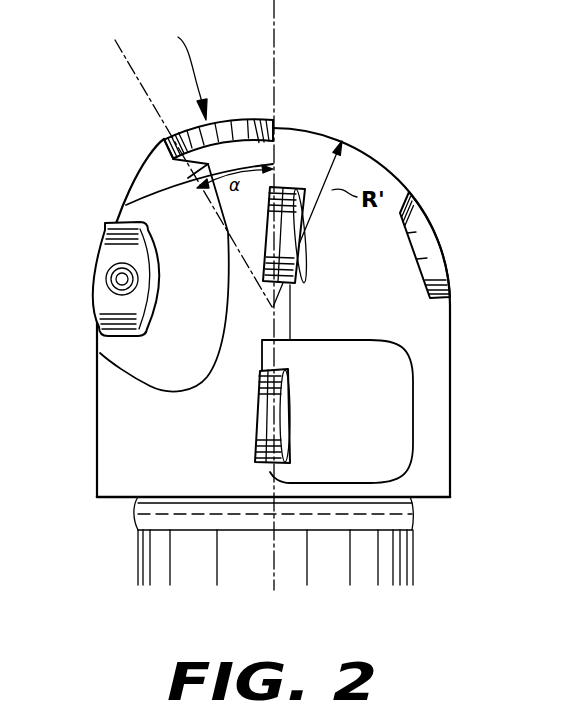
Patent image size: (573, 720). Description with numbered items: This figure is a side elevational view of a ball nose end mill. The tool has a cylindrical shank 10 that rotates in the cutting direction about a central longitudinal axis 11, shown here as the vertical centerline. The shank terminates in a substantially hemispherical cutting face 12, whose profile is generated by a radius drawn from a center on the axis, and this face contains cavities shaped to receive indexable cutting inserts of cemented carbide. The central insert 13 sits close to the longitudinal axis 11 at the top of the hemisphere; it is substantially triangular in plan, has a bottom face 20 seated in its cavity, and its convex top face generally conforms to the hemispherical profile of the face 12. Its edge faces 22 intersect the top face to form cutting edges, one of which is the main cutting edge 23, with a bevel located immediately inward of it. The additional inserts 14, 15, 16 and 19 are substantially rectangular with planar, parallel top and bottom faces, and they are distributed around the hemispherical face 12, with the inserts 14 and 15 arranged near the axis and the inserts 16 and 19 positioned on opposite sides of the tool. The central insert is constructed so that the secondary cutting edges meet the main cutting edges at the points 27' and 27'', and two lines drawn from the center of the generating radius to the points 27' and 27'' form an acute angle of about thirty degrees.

The cylindrical shank 10 is at (318, 541).
The central longitudinal axis 11 is at (322, 295).
The hemispherical cutting face 12 is at (358, 151).
The central insert 13 is at (180, 65).
The cutting insert 14 is at (280, 390).
The cutting insert 15 is at (283, 250).
The cutting insert 16 is at (436, 268).
The cutting insert 19 is at (96, 312).
The bottom face 20 is at (188, 178).
The edge faces 22 is at (238, 121).
The cutting edge 23 is at (178, 134).
The point 27' is at (299, 112).
The point 27'' is at (111, 143).